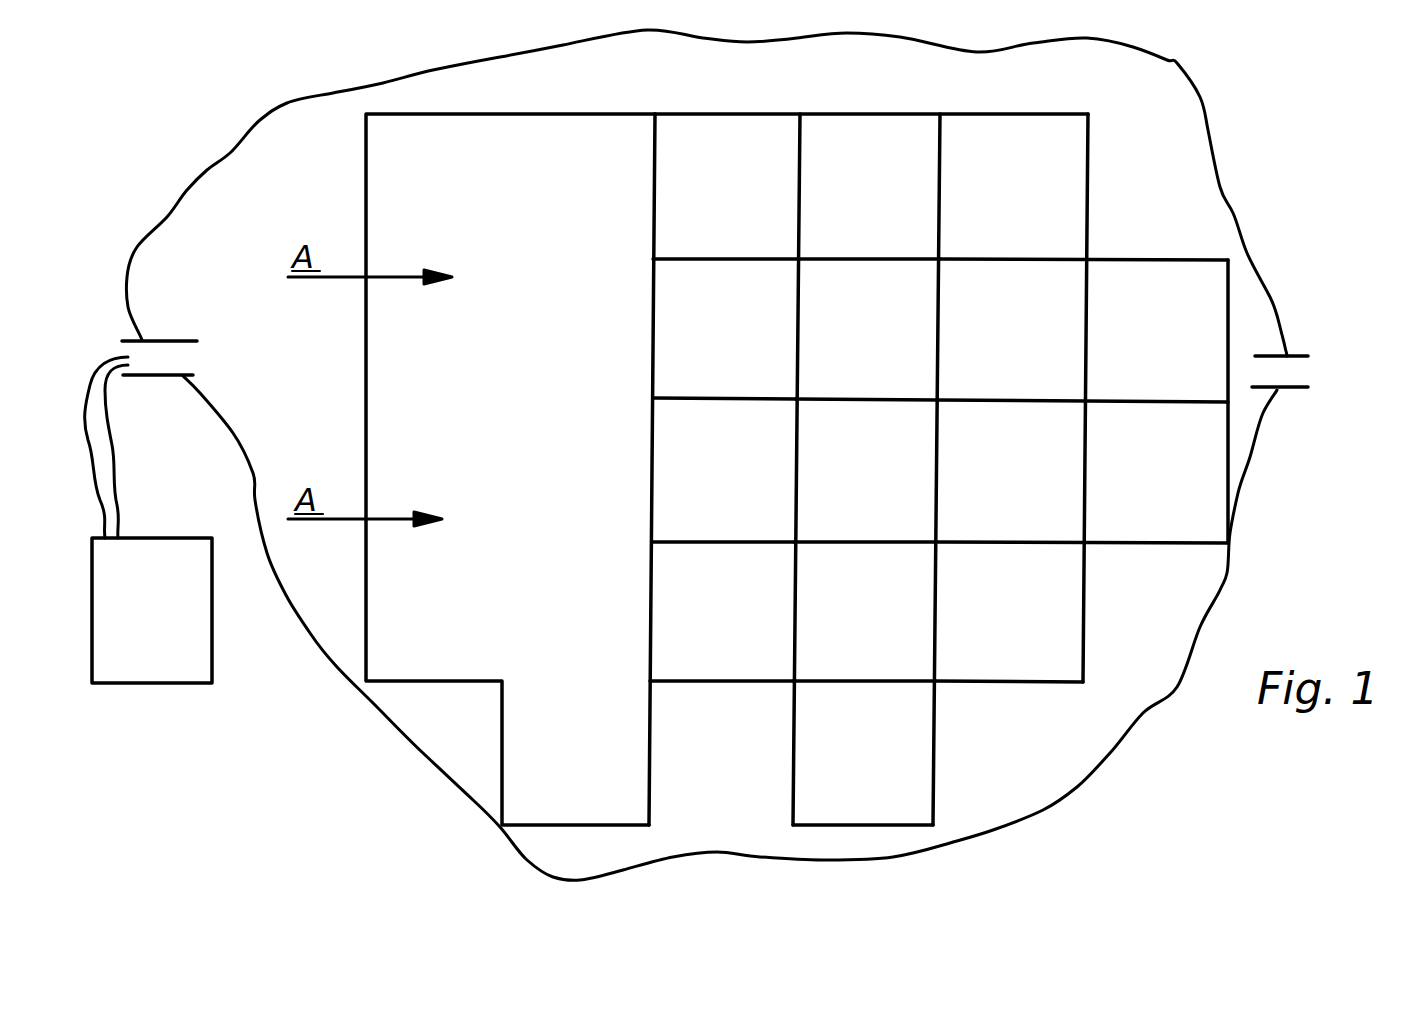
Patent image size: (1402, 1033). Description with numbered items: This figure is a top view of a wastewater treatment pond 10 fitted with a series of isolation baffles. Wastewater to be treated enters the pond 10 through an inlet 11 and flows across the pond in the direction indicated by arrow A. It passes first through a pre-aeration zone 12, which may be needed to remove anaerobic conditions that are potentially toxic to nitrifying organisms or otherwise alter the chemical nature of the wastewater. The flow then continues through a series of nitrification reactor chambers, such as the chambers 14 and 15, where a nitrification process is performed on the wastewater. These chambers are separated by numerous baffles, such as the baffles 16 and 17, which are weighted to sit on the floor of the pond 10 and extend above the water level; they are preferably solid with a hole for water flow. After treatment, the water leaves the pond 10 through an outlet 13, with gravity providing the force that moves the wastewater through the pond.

The wastewater treatment pond 10 is at (1207, 120).
The inlet 11 is at (185, 341).
The pre-aeration zone 12 is at (520, 413).
The outlet 13 is at (1297, 352).
The nitrification reactor chamber 14 is at (870, 470).
The nitrification reactor chamber 15 is at (1020, 512).
The baffle 16 is at (793, 452).
The baffle 17 is at (939, 448).